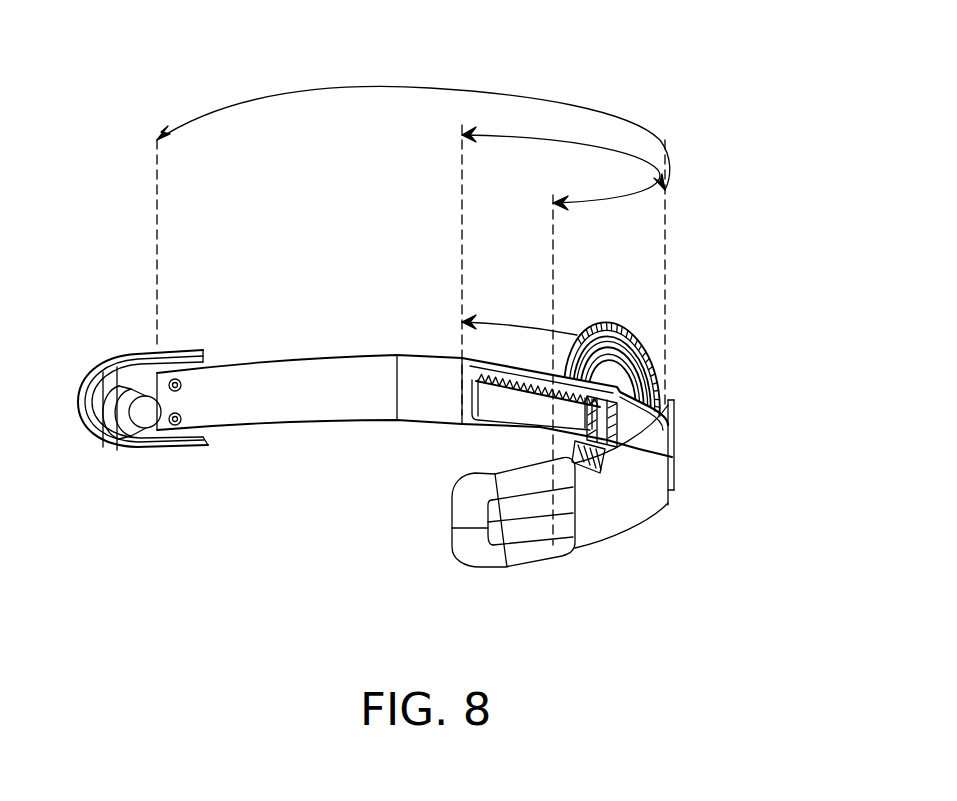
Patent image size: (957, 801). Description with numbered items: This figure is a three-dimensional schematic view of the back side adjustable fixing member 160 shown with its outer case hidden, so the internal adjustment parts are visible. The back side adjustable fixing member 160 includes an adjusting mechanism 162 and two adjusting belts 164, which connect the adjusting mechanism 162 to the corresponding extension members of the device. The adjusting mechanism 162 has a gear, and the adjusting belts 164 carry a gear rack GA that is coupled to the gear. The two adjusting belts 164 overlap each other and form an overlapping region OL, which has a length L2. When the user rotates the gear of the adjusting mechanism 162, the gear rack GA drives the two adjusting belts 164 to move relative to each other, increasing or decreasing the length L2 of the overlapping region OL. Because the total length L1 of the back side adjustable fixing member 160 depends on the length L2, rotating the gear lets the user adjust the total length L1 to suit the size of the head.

The total length L1 is at (375, 88).
The length of the overlapping region L2 is at (507, 140).
The overlapping region OL is at (524, 325).
The gear rack GA is at (597, 431).
The adjusting mechanism 162 is at (670, 397).
The back side adjustable fixing member 160 is at (463, 432).
The adjusting belt 164 is at (285, 407).